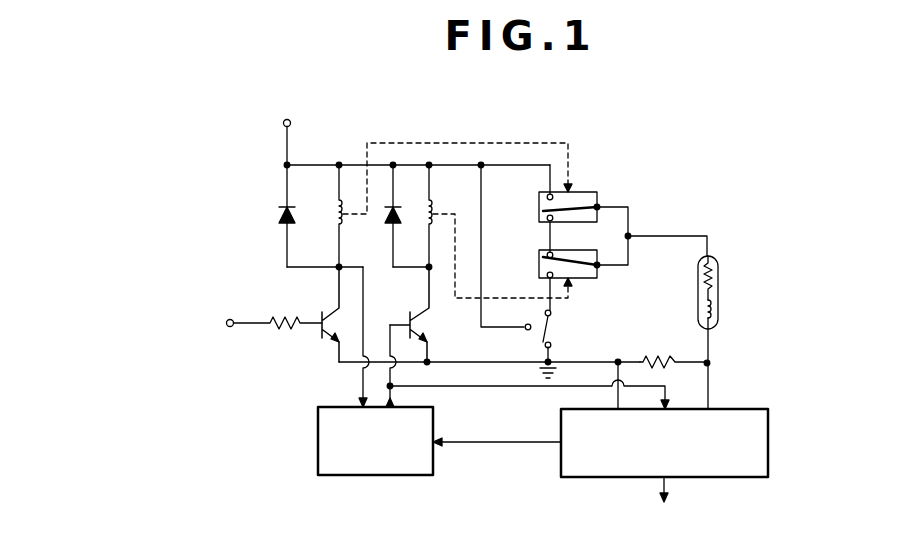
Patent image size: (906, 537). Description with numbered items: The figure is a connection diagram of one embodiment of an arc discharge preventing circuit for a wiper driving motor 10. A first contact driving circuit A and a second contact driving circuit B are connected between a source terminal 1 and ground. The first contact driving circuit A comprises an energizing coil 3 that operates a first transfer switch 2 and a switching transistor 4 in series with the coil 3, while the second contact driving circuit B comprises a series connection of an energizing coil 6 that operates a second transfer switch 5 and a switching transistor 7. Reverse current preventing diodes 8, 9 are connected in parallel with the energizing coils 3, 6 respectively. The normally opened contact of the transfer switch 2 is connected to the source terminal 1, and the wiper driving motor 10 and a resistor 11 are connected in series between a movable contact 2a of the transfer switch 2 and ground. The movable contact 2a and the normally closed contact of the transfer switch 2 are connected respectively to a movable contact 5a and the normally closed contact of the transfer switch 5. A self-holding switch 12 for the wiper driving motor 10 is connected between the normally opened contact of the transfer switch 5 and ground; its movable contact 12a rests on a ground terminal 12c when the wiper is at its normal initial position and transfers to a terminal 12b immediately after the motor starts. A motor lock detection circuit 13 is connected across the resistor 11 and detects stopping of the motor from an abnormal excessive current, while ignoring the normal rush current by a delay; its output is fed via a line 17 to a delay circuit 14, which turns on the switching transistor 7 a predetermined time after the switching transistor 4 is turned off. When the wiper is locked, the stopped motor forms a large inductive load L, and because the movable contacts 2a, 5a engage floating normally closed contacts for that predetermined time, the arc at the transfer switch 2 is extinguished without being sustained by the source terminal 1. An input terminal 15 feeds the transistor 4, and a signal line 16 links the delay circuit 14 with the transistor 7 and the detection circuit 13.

The source terminal 1 is at (283, 123).
The first transfer switch 2 is at (580, 192).
The movable contact of the first transfer switch 2a is at (585, 203).
The energizing coil 3 is at (338, 213).
The switching transistor 4 is at (319, 333).
The second transfer switch 5 is at (587, 280).
The movable contact of the second transfer switch 5a is at (575, 258).
The energizing coil 6 is at (435, 214).
The switching transistor 7 is at (416, 328).
The reverse current preventing diode 8 is at (279, 214).
The reverse current preventing diode 9 is at (386, 217).
The wiper driving motor 10 is at (719, 273).
The inductive load L is at (719, 310).
The resistor 11 is at (656, 359).
The self-holding switch 12 is at (557, 330).
The movable contact of the self-holding switch 12a is at (552, 321).
The terminal of the self-holding switch 12b is at (522, 330).
The ground terminal of the self-holding switch 12c is at (551, 345).
The motor lock detection circuit 13 is at (768, 441).
The delay circuit 14 is at (317, 437).
The input terminal 15 is at (226, 323).
The signal line 16 is at (393, 391).
The line 17 is at (497, 443).
The first contact driving circuit A is at (343, 145).
The second contact driving circuit B is at (416, 141).